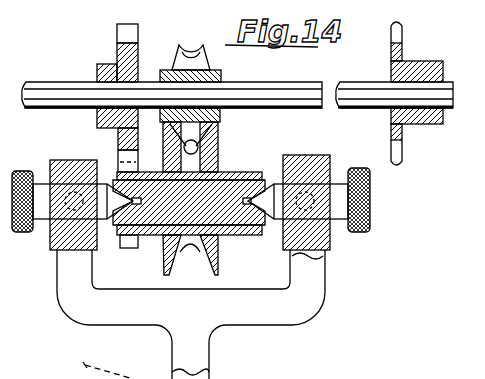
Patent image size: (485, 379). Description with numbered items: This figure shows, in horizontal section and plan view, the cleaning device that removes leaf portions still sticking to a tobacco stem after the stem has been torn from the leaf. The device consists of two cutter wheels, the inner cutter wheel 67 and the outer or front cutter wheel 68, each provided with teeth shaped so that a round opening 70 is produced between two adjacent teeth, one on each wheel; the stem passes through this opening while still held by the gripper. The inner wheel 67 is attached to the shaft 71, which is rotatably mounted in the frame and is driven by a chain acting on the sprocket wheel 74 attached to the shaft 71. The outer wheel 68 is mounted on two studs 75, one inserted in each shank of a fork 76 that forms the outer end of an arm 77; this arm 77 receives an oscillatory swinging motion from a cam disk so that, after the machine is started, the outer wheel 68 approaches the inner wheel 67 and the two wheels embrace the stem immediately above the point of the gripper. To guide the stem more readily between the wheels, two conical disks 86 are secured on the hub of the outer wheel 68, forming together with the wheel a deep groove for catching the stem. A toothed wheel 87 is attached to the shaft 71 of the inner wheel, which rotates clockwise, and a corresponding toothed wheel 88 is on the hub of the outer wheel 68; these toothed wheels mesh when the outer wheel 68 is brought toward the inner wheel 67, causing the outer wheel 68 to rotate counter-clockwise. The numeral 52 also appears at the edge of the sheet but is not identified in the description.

The shaft 71 is at (234, 85).
The sprocket wheel 74 is at (392, 43).
The toothed wheel 87 is at (134, 40).
The inner cutter wheel 67 is at (174, 71).
The round opening 70 is at (199, 148).
The outer cutter wheel 68 is at (250, 234).
The toothed wheel 88 is at (120, 247).
The conical disks 86 is at (166, 251).
The studs 75 is at (50, 196).
The fork 76 is at (257, 310).
The arm 77 is at (203, 350).
The lever 52 is at (78, 370).